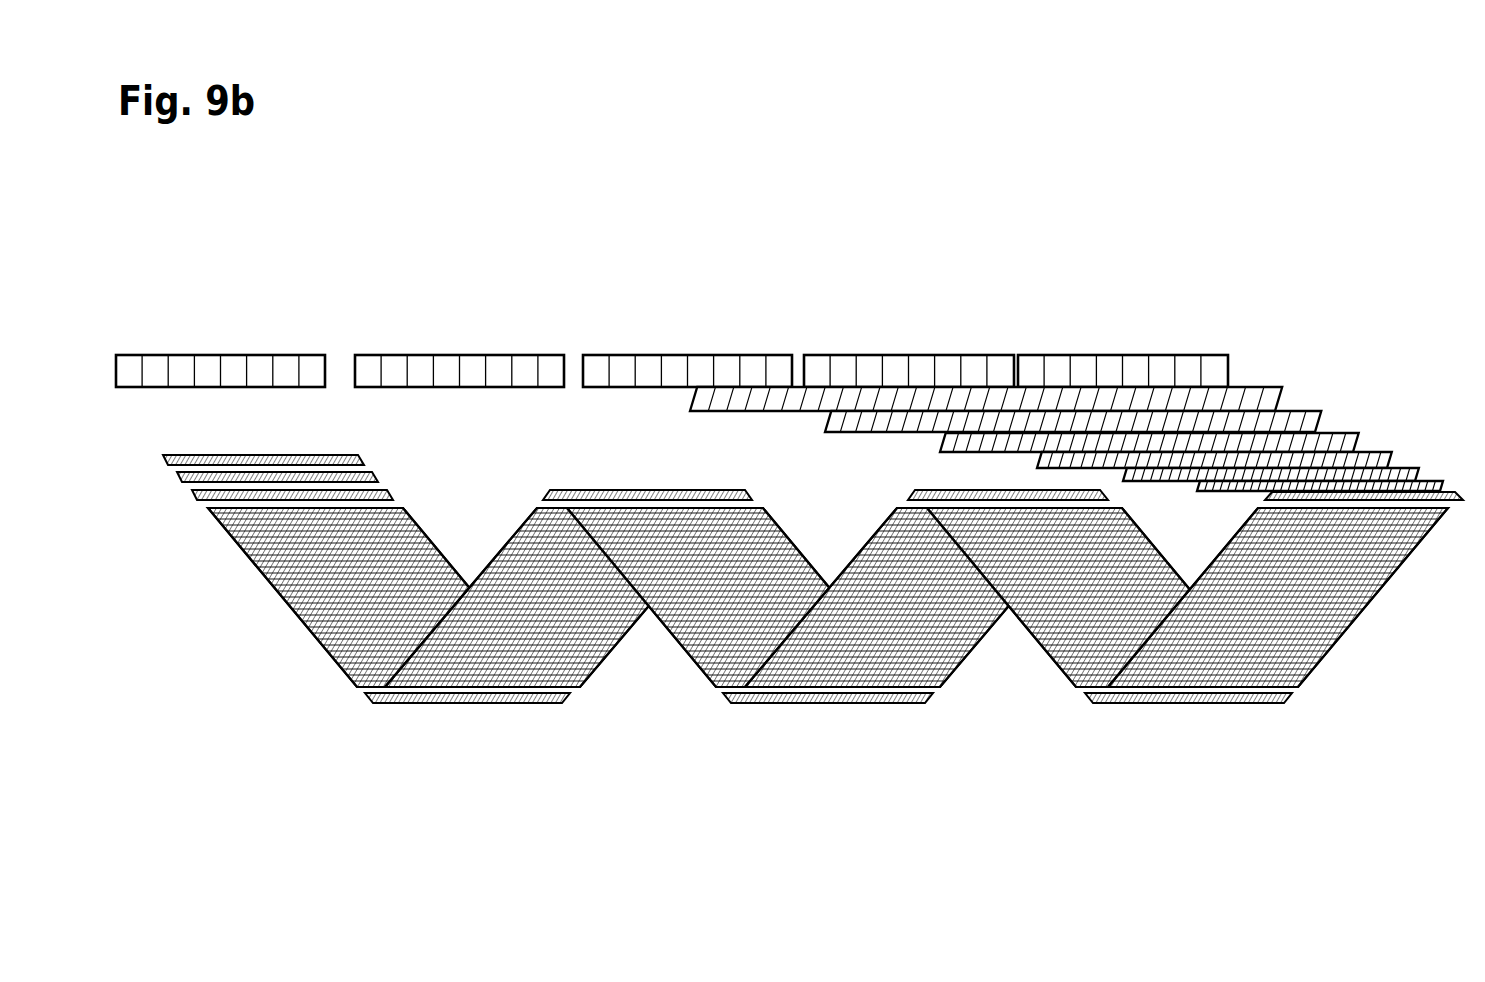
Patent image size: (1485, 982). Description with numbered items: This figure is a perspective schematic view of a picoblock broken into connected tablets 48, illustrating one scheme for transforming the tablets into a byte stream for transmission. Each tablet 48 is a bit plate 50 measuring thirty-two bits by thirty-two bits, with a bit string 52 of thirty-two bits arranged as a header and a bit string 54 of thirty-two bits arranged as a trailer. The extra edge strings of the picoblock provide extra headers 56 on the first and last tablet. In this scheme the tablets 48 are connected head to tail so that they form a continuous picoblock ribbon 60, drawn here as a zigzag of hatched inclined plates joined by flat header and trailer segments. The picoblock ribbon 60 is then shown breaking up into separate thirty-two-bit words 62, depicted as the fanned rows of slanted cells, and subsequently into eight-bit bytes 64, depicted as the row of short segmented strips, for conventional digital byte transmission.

The tablet 48 is at (810, 616).
The bit plate 50 is at (246, 566).
The bit string (header) 52 is at (389, 495).
The bit string (trailer) 54 is at (366, 700).
The extra header 56 is at (363, 461).
The picoblock ribbon 60 is at (274, 606).
The 32-bit word 62 is at (1278, 396).
The 8-bit byte 64 is at (967, 356).